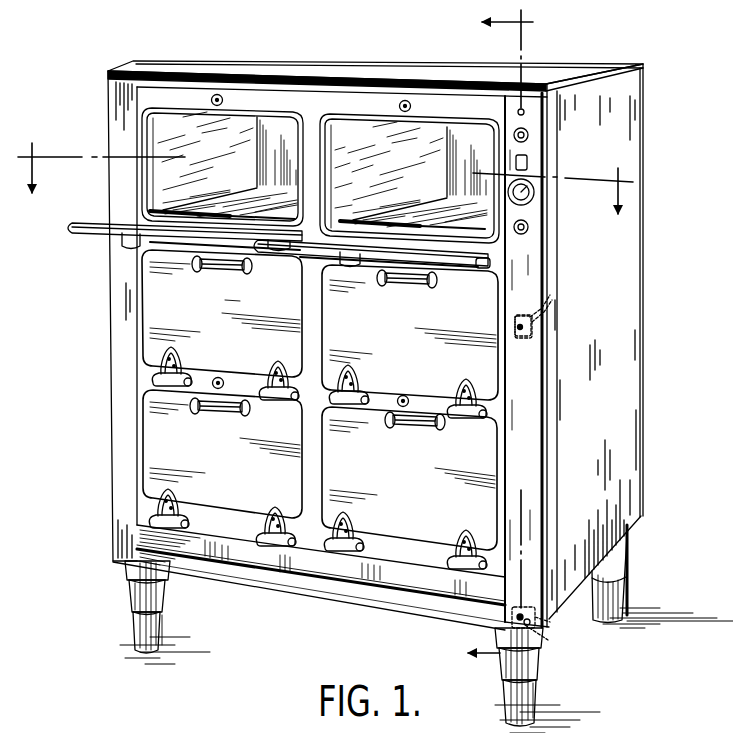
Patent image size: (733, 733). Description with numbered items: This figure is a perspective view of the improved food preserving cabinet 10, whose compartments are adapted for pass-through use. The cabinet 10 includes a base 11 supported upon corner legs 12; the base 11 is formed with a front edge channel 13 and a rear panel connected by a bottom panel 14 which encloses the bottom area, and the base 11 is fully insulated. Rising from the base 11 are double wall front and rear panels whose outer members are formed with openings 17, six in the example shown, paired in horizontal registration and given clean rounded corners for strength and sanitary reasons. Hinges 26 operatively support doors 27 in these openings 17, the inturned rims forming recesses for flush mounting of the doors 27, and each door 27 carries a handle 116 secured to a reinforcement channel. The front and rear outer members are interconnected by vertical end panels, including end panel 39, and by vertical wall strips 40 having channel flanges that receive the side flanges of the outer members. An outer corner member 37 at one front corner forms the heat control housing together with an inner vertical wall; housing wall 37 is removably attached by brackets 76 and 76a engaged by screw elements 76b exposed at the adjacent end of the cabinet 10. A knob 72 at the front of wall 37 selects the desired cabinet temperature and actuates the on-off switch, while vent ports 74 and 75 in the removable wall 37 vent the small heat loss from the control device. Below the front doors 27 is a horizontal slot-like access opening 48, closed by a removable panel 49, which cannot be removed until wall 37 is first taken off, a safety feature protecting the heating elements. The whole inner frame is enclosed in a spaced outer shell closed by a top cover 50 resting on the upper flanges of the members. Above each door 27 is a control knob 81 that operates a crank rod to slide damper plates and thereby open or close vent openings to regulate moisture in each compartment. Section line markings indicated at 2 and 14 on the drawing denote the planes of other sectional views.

The cabinet 10 is at (371, 323).
The base 11 is at (225, 581).
The corner legs 12 is at (130, 596).
The front edge channel 13 is at (342, 590).
The bottom panel 14 is at (485, 335).
The openings 17 is at (271, 127).
The section line 2 is at (325, 196).
The hinges 26 is at (468, 272).
The doors 27 is at (82, 238).
The outer corner member 37 is at (548, 382).
The end panel 39 is at (625, 316).
The vertical wall strips 40 is at (118, 345).
The access opening 48 is at (293, 557).
The removable panel 49 is at (393, 584).
The top cover 50 is at (368, 72).
The knob 72 is at (536, 196).
The vent port 74 is at (539, 230).
The vent port 75 is at (530, 136).
The brackets 76 is at (552, 299).
The brackets 76a is at (540, 630).
The screw elements 76b is at (583, 629).
The control knobs 81 is at (219, 94).
The handles 116 is at (132, 244).